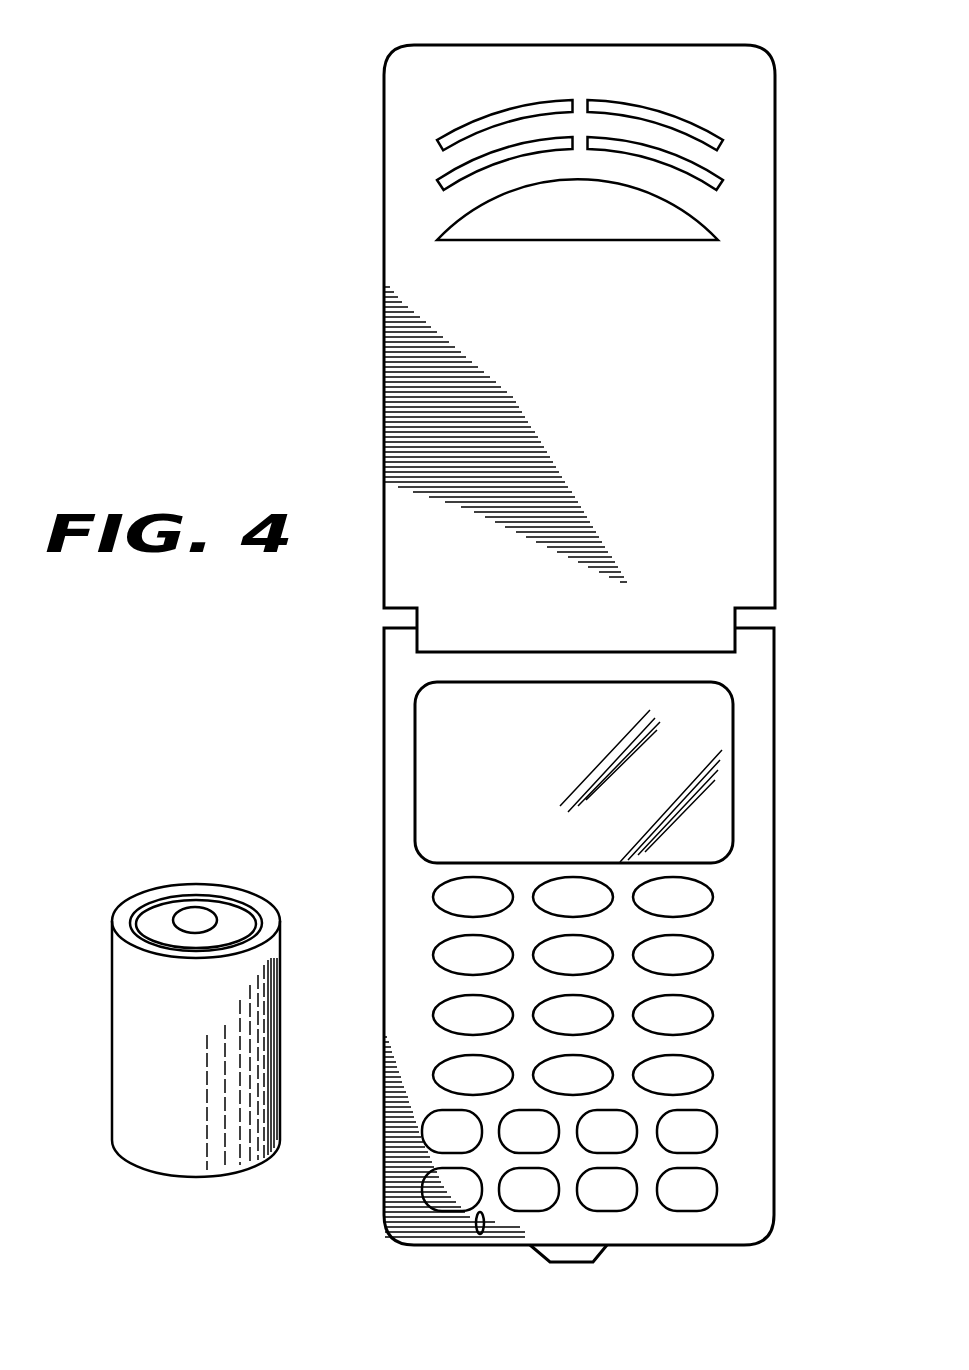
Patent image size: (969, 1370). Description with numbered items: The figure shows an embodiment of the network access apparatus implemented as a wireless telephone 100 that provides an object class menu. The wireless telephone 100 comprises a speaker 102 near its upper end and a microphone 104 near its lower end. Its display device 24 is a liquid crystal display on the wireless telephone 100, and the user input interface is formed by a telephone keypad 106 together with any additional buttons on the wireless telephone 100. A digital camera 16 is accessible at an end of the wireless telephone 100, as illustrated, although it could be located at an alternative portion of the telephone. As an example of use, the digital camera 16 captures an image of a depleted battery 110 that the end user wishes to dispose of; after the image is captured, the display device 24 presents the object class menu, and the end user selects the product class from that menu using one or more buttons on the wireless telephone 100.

The wireless telephone 100 is at (384, 697).
The speaker 102 is at (703, 122).
The display device 24 is at (735, 738).
The telephone keypad 106 is at (710, 988).
The microphone 104 is at (478, 1232).
The digital camera 16 is at (600, 1252).
The depleted battery 110 is at (143, 1170).